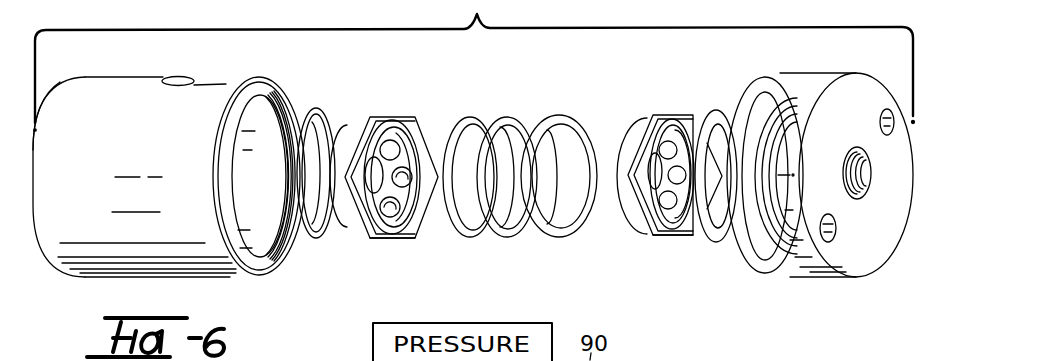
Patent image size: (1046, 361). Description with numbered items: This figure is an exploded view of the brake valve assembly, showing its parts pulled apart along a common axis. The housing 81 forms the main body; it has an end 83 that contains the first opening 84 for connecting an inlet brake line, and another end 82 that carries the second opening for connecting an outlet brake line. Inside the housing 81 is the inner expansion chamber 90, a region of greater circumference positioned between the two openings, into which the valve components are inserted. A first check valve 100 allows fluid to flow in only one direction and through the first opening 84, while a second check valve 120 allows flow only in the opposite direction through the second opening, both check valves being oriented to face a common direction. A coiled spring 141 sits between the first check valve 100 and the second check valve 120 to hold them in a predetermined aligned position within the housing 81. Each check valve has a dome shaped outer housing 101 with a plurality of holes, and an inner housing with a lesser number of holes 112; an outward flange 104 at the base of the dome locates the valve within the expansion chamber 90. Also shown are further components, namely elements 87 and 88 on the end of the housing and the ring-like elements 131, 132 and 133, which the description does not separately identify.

The housing 81 is at (131, 95).
The another end of the housing 82 is at (52, 102).
The end of the housing 83 is at (832, 100).
The first opening 84 is at (862, 185).
The pin hole 87 is at (830, 242).
The pin hole 88 is at (887, 115).
The inner expansion chamber 90 is at (236, 168).
The first check valve 100 is at (688, 105).
The dome shaped outer housing 101 is at (342, 230).
The outward flange 104 is at (385, 242).
The holes 112 is at (403, 182).
The second check valve 120 is at (424, 113).
The flange ring 131 is at (781, 58).
The seal ring 132 is at (735, 80).
The O-ring 133 is at (352, 88).
The coiled spring 141 is at (546, 116).